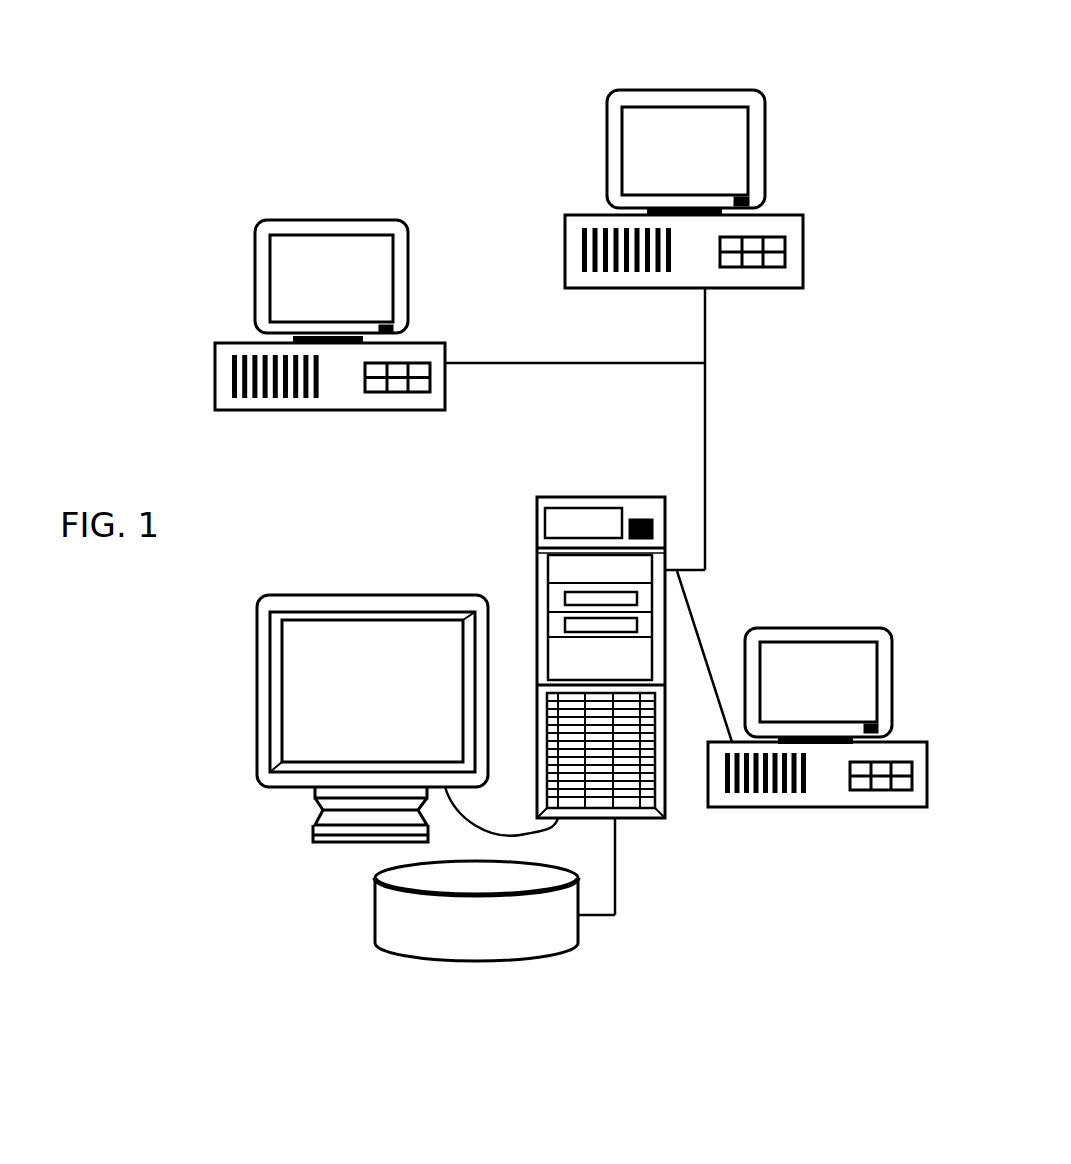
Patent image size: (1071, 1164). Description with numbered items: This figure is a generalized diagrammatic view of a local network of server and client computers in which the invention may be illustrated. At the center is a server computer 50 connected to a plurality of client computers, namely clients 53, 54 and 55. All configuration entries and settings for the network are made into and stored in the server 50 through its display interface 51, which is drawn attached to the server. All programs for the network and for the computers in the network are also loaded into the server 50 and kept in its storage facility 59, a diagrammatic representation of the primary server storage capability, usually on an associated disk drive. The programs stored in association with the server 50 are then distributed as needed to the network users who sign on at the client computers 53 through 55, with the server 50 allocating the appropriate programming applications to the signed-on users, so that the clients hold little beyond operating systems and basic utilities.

The server computer 50 is at (537, 512).
The display interface 51 is at (257, 780).
The client computer 53 is at (348, 230).
The client computer 54 is at (675, 97).
The client computer 55 is at (783, 788).
The storage facility 59 is at (470, 928).